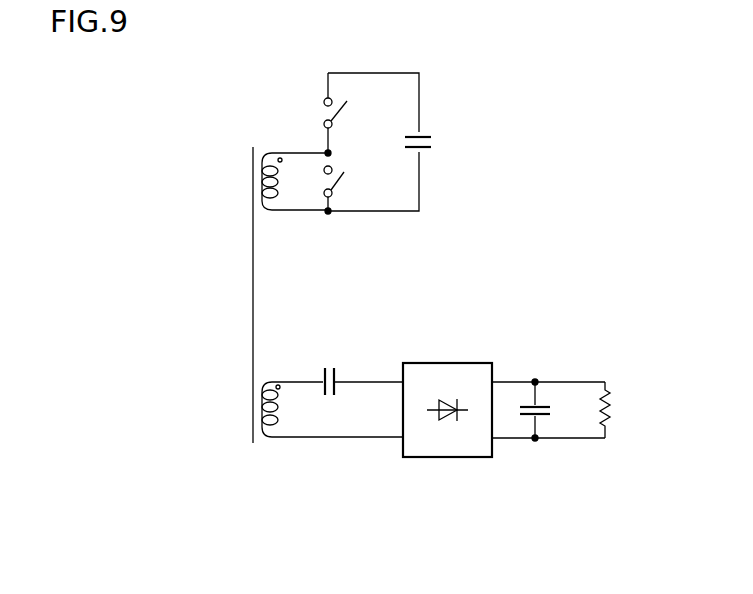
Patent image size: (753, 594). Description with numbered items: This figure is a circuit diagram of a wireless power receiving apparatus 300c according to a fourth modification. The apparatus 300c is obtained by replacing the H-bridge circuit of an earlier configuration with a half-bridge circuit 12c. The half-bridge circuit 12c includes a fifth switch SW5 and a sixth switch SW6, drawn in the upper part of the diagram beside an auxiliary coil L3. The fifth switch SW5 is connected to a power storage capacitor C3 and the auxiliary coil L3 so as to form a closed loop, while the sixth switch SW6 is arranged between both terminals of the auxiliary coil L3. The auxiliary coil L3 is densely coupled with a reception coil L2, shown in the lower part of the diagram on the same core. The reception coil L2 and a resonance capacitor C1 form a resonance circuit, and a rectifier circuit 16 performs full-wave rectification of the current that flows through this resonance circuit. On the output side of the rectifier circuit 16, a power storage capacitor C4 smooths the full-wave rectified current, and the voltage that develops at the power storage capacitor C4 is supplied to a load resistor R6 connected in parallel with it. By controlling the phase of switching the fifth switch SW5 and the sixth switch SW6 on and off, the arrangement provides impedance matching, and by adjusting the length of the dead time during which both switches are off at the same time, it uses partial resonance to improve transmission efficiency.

The fifth switch SW5 is at (322, 110).
The sixth switch SW6 is at (343, 183).
The power storage capacitor C3 is at (436, 141).
The auxiliary coil L3 is at (270, 214).
The half-bridge circuit 12c is at (353, 217).
The resonance capacitor C1 is at (330, 366).
The rectifier circuit 16 is at (443, 363).
The reception coil L2 is at (282, 415).
The power storage capacitor C4 is at (545, 398).
The load resistor R6 is at (613, 416).
The wireless power receiving apparatus 300c is at (481, 522).